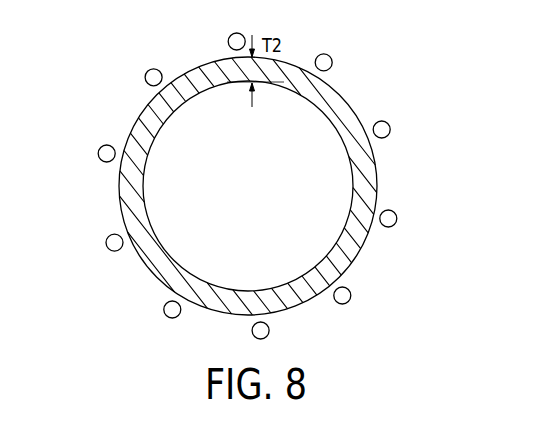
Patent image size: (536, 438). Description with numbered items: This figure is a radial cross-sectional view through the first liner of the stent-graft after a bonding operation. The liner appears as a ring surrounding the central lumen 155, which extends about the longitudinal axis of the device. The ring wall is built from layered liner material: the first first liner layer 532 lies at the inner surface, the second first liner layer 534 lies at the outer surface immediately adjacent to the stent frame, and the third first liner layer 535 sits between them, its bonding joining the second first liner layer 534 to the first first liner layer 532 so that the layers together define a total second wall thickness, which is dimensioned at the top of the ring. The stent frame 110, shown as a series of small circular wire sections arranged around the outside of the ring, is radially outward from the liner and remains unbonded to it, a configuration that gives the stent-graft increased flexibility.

The second first liner layer 534 is at (140, 117).
The first first liner layer 532 is at (220, 82).
The third first liner layer 535 is at (192, 83).
The stent frame 110 is at (105, 145).
The lumen 155 is at (258, 182).